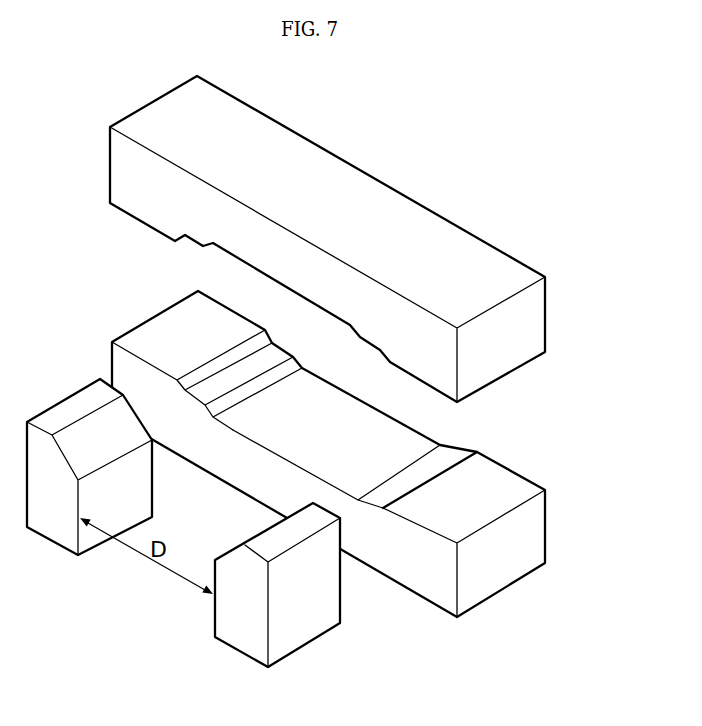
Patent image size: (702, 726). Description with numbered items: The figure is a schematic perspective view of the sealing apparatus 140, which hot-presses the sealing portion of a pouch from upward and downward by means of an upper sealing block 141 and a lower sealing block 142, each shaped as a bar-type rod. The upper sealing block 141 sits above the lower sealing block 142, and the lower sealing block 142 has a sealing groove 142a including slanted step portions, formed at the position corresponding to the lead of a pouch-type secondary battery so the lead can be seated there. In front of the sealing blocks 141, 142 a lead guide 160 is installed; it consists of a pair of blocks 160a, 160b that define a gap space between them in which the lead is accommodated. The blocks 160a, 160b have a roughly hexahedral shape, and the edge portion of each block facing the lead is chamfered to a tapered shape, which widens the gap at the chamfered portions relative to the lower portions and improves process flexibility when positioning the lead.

The sealing apparatus 140 is at (419, 154).
The upper sealing block 141 is at (544, 318).
The lower sealing block 142 is at (543, 527).
The sealing groove 142a is at (381, 428).
The lead guide 160 is at (110, 623).
The block 160a is at (88, 557).
The block 160b is at (215, 618).